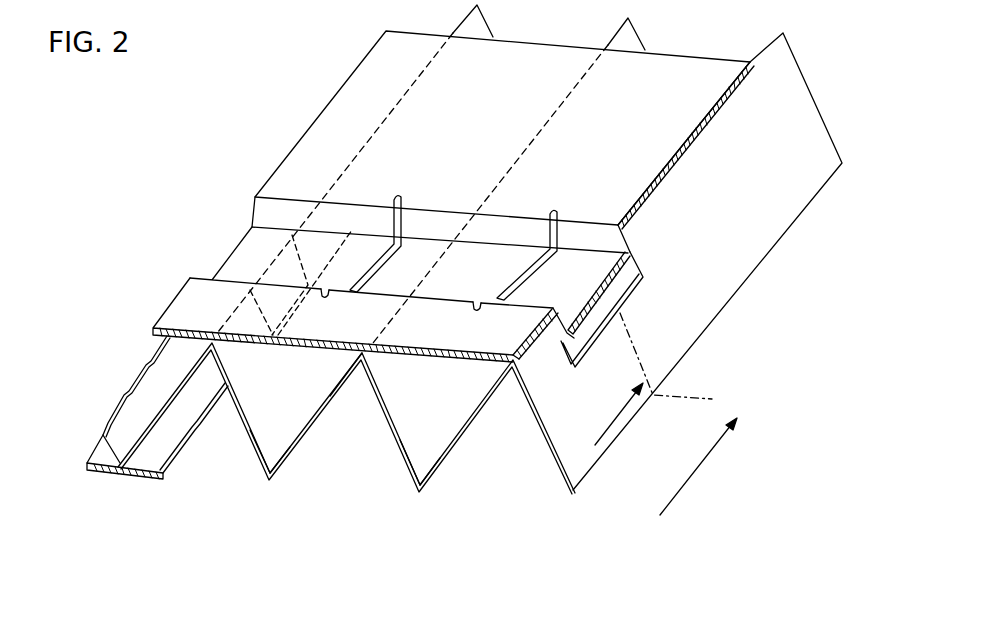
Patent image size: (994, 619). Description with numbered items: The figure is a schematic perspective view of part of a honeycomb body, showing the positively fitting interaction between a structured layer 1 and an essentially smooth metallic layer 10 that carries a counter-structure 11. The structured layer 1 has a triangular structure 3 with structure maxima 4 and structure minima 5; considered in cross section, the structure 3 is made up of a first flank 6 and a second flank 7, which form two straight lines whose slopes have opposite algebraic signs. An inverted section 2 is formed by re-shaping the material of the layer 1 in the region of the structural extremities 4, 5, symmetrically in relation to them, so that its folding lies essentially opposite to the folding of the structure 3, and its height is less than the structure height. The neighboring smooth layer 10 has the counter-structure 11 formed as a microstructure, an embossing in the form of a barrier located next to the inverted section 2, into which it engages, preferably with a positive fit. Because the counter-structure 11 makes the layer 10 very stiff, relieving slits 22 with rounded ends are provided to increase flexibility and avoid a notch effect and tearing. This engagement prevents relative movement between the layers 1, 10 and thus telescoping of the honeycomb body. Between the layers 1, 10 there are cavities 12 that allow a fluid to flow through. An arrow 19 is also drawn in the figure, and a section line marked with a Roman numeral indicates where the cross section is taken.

The structured layer 1 is at (763, 185).
The inverted section 2 is at (627, 287).
The structure 3 is at (532, 417).
The structure maximum 4 is at (353, 373).
The structure minimum 5 is at (421, 487).
The first flank 6 is at (285, 463).
The second flank 7 is at (410, 463).
The essentially smooth layer 10 is at (367, 80).
The counter-structure 11 is at (240, 238).
The cavity 12 is at (277, 425).
The mounting direction arrow 19 is at (683, 480).
The relieving slit 22 is at (380, 260).